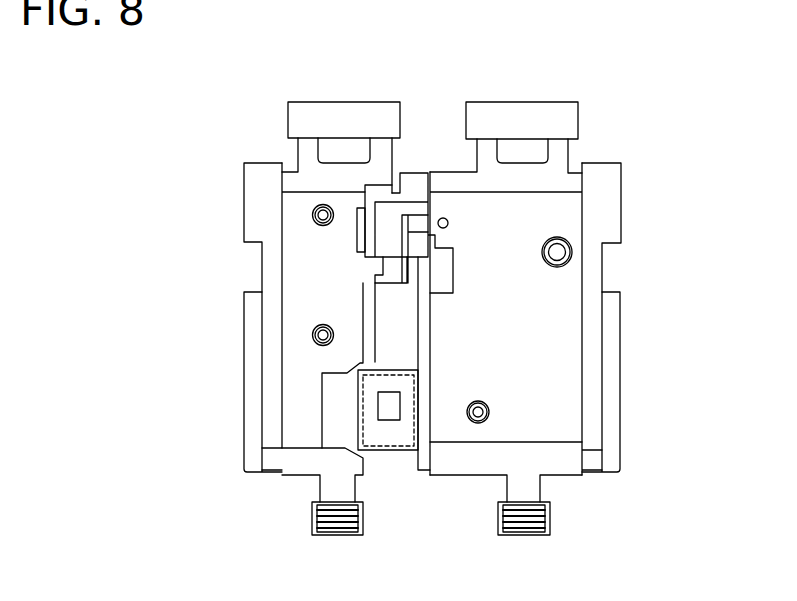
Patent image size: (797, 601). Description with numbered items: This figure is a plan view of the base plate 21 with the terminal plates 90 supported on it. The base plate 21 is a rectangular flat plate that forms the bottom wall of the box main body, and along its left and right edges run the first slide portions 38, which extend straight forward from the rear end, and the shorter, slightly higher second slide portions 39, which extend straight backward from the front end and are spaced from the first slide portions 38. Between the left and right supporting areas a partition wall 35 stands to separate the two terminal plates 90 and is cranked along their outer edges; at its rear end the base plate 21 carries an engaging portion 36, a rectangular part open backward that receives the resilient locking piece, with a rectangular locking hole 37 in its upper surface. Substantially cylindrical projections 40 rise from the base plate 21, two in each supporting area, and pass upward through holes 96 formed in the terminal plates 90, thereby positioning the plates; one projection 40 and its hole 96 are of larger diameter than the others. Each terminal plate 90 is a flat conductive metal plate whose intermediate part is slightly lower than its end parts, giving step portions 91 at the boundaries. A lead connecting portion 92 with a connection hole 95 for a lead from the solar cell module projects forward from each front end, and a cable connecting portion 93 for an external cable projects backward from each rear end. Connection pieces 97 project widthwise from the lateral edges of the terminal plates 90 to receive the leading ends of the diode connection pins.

The base plate 21 is at (622, 173).
The partition wall 35 is at (375, 215).
The engaging portion 36 is at (407, 445).
The locking hole 37 is at (380, 408).
The first slide portion 38 is at (245, 350).
The second slide portion 39 is at (245, 233).
The projection 40 is at (323, 205).
The terminal plate 90 is at (318, 102).
The step portion 91 is at (292, 448).
The lead connecting portion 92 is at (293, 115).
The cable connecting portion 93 is at (343, 528).
The connection hole 95 is at (370, 146).
The hole 96 is at (313, 222).
The connection piece 97 is at (388, 268).